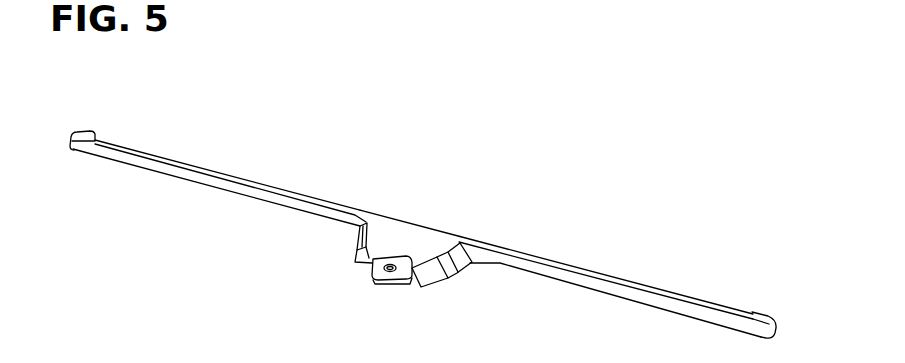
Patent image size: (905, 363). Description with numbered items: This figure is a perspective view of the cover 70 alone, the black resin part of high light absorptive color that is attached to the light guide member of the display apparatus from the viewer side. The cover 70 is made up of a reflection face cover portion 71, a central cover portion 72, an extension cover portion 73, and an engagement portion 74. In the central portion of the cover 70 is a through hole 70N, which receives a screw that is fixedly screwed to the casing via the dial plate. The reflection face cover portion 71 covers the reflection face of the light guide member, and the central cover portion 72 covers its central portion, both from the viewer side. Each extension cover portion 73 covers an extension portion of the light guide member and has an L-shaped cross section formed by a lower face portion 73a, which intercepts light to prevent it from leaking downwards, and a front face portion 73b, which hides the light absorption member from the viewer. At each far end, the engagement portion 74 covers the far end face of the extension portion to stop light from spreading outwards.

The cover 70 is at (188, 196).
The through hole 70N is at (385, 284).
The reflection face cover portion 71 is at (358, 238).
The central cover portion 72 is at (405, 240).
The extension cover portion 73 is at (173, 160).
The lower face portion 73a is at (267, 199).
The front face portion 73b is at (246, 179).
The engagement portion 74 is at (92, 130).